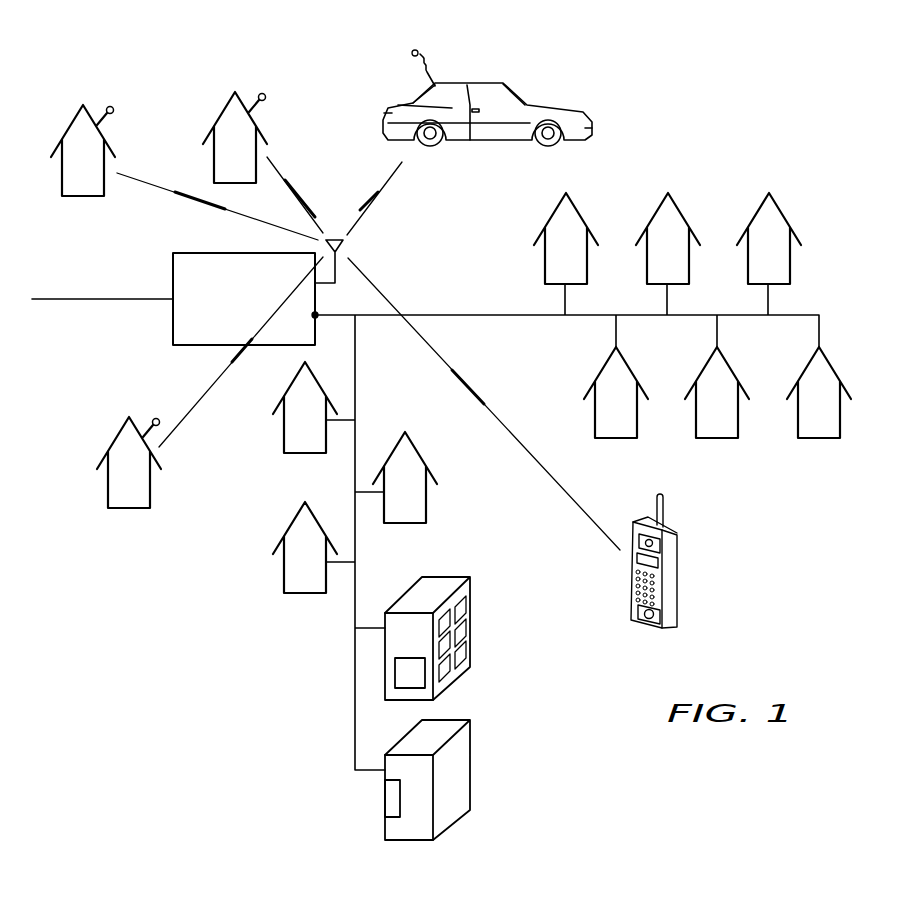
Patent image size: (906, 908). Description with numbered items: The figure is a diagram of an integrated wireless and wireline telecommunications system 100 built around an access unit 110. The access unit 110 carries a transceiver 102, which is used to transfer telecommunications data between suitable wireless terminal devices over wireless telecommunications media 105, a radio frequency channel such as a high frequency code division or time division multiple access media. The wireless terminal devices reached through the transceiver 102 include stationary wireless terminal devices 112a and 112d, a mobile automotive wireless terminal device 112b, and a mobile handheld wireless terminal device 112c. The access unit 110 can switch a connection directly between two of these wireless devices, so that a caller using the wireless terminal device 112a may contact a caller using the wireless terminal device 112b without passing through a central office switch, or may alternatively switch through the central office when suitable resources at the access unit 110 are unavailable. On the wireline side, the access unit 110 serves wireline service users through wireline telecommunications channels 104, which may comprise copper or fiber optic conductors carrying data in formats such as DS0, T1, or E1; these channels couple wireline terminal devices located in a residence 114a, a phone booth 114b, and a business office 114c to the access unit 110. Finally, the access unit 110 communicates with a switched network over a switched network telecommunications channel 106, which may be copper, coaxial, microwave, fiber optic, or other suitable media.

The integrated wireless and wireline telecommunications system 100 is at (297, 55).
The transceiver 102 is at (344, 242).
The wireline telecommunications channels 104 is at (466, 313).
The wireless telecommunications media 105 is at (168, 193).
The switched network telecommunications channel 106 is at (52, 300).
The access unit 110 is at (172, 325).
The stationary wireless terminal device 112a is at (223, 108).
The mobile automotive wireless terminal device 112b is at (542, 105).
The mobile handheld wireless terminal device 112c is at (678, 578).
The stationary wireless terminal device 112d is at (72, 122).
The residence 114a is at (600, 198).
The phone booth 114b is at (383, 825).
The business office 114c is at (445, 580).